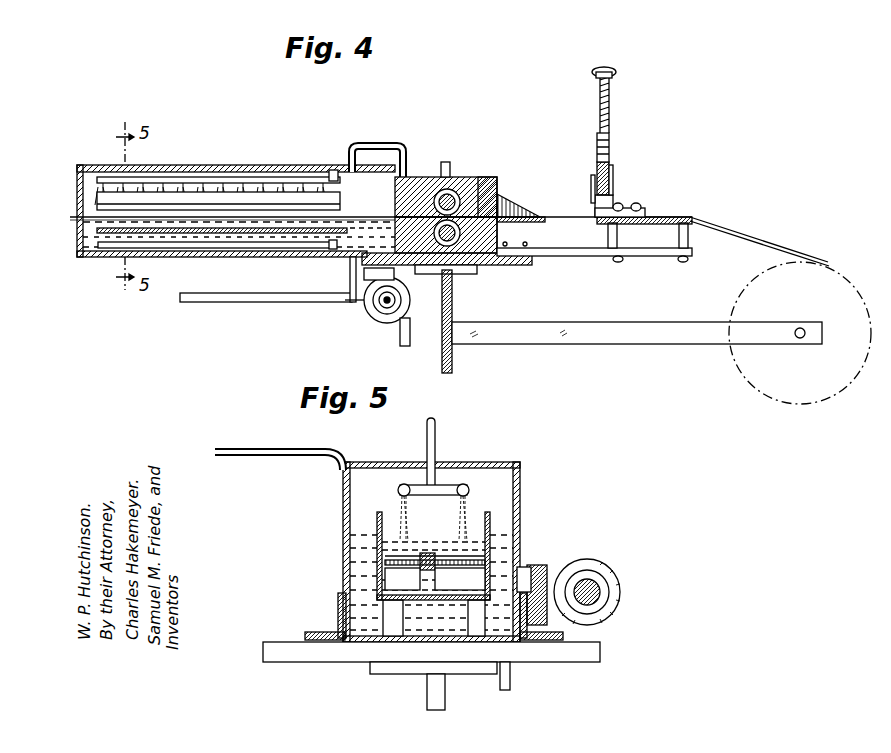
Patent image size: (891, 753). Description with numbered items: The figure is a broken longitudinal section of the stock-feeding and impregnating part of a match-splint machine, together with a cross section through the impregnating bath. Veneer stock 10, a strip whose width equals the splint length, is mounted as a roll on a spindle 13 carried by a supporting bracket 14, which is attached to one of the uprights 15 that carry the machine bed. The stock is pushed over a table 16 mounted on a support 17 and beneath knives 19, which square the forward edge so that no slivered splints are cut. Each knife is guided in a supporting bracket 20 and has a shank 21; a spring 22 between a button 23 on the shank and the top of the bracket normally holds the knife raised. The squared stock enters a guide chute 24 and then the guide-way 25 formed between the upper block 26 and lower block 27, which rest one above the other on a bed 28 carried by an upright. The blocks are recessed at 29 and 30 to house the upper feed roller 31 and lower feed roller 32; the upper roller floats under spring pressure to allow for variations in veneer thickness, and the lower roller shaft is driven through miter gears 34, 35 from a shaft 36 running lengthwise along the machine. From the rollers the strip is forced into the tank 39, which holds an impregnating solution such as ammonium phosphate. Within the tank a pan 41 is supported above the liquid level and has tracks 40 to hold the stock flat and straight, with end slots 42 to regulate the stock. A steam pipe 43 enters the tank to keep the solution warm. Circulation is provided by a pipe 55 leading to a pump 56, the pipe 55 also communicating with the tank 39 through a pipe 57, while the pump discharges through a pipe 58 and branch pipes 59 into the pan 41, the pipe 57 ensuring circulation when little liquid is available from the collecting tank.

In FIG. 4, the veneer stock 10 is at (748, 236).
In FIG. 5, the veneer stock 10 is at (470, 560).
In FIG. 4, the spindle 13 is at (797, 338).
In FIG. 4, the supporting bracket 14 is at (650, 344).
In FIG. 4, the upright 15 is at (452, 365).
In FIG. 4, the table 16 is at (660, 218).
In FIG. 4, the support 17 is at (600, 258).
In FIG. 4, the knife 19 is at (592, 190).
In FIG. 4, the supporting bracket 20 is at (605, 200).
In FIG. 4, the shank 21 is at (610, 124).
In FIG. 4, the spring 22 is at (611, 104).
In FIG. 4, the button 23 is at (615, 70).
In FIG. 4, the guide chute 24 is at (540, 225).
In FIG. 4, the guide-way 25 is at (486, 183).
In FIG. 4, the upper block 26 is at (498, 183).
In FIG. 4, the lower block 27 is at (482, 250).
In FIG. 4, the bed 28 is at (525, 264).
In FIG. 4, the recess 29 is at (457, 185).
In FIG. 4, the recess 30 is at (452, 250).
In FIG. 4, the upper feed roller 31 is at (440, 195).
In FIG. 4, the lower feed roller 32 is at (440, 246).
In FIG. 5, the miter gear 34 is at (545, 565).
In FIG. 5, the miter gear 35 is at (592, 559).
In FIG. 5, the shaft 36 is at (598, 585).
In FIG. 4, the tank 39 is at (272, 257).
In FIG. 5, the tank 39 is at (343, 527).
In FIG. 4, the track 40 is at (342, 205).
In FIG. 5, the track 40 is at (470, 565).
In FIG. 4, the pan 41 is at (330, 176).
In FIG. 5, the pan 41 is at (488, 512).
In FIG. 4, the end slot 42 is at (348, 229).
In FIG. 4, the steam pipe 43 is at (215, 248).
In FIG. 4, the pipe 55 is at (220, 302).
In FIG. 4, the pump 56 is at (376, 318).
In FIG. 4, the pipe 57 is at (350, 268).
In FIG. 4, the pipe 58 is at (372, 146).
In FIG. 5, the pipe 58 is at (436, 432).
In FIG. 5, the branch pipe 59 is at (404, 483).